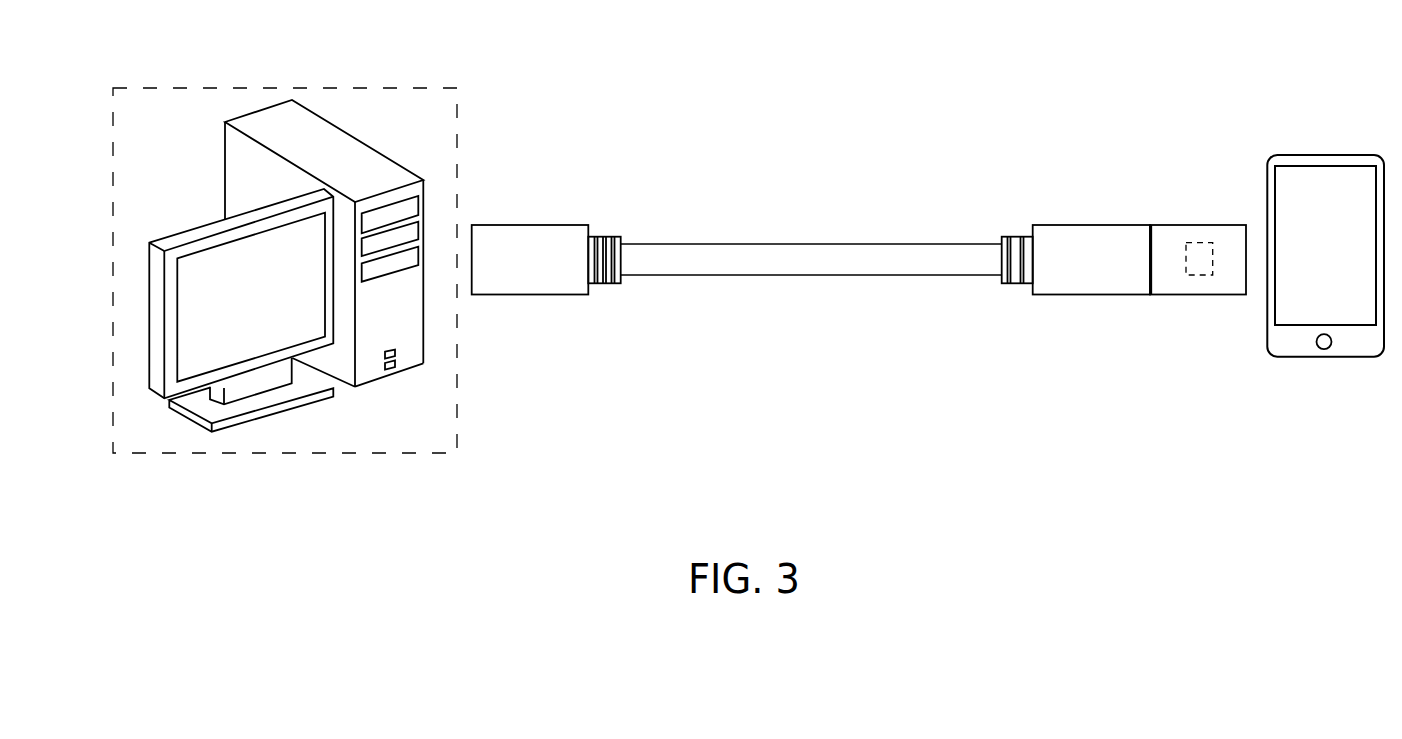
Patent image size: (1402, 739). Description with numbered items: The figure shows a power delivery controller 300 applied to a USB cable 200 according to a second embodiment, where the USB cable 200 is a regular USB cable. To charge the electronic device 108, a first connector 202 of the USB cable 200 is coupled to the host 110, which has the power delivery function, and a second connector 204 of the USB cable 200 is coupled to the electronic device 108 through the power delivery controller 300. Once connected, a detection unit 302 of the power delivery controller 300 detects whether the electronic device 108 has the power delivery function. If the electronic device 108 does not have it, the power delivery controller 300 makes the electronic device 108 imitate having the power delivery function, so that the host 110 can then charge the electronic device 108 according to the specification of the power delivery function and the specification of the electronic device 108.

The host 110 is at (283, 87).
The USB cable 200 is at (911, 136).
The first connector 202 is at (531, 223).
The second connector 204 is at (1092, 223).
The power delivery controller 300 is at (1198, 223).
The detection unit 302 is at (1192, 278).
The electronic device 108 is at (1319, 154).